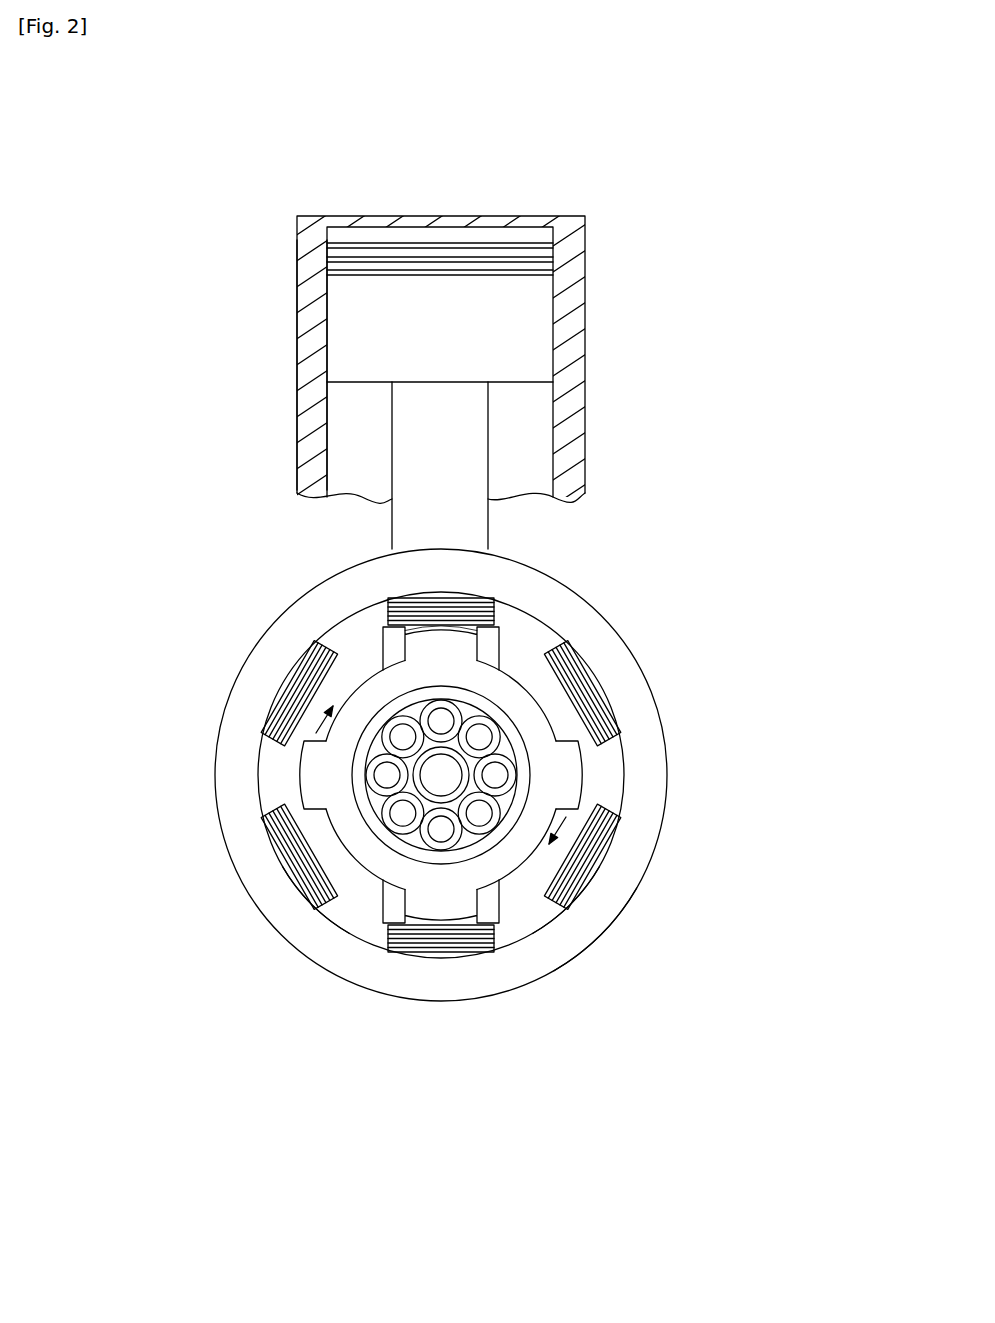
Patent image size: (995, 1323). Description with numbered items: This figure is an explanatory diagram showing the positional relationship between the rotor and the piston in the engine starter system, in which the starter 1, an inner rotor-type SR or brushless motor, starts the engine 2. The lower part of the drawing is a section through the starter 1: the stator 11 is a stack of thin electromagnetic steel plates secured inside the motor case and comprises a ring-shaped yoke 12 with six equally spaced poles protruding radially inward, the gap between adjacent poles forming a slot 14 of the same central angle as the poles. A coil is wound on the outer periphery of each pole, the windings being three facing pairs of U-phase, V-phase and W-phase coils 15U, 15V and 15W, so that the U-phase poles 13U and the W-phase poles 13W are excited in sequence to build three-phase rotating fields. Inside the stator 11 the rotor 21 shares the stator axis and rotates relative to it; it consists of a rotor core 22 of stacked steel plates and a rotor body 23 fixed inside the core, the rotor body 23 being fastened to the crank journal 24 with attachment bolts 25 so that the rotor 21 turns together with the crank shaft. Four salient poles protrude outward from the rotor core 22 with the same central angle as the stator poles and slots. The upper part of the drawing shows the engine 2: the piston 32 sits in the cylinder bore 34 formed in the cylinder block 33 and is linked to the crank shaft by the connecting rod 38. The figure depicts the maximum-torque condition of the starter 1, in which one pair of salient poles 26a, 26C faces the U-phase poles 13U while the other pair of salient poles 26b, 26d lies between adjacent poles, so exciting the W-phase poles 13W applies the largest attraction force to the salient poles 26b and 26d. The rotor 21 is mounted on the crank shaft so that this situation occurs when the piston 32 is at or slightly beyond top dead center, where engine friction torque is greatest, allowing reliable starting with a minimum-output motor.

The starter 1 is at (668, 733).
The engine 2 is at (537, 197).
The stator 11 is at (267, 888).
The yoke 12 is at (580, 930).
The U-phase poles 13U is at (505, 693).
The W-phase poles 13W is at (293, 772).
The slot 14 is at (345, 910).
The U-phase coils 15U is at (385, 600).
The V-phase coils 15V is at (595, 685).
The W-phase coils 15W is at (275, 698).
The rotor 21 is at (385, 870).
The rotor core 22 is at (473, 635).
The rotor body 23 is at (478, 860).
The crank journal 24 is at (590, 905).
The attachment bolts 25 is at (380, 718).
The salient pole 26a is at (443, 647).
The salient pole 26b is at (567, 760).
The salient pole 26C is at (450, 900).
The salient pole 26d is at (302, 778).
The piston 32 is at (530, 318).
The cylinder block 33 is at (555, 385).
The cylinder bore 34 is at (350, 422).
The connecting rod 38 is at (450, 452).